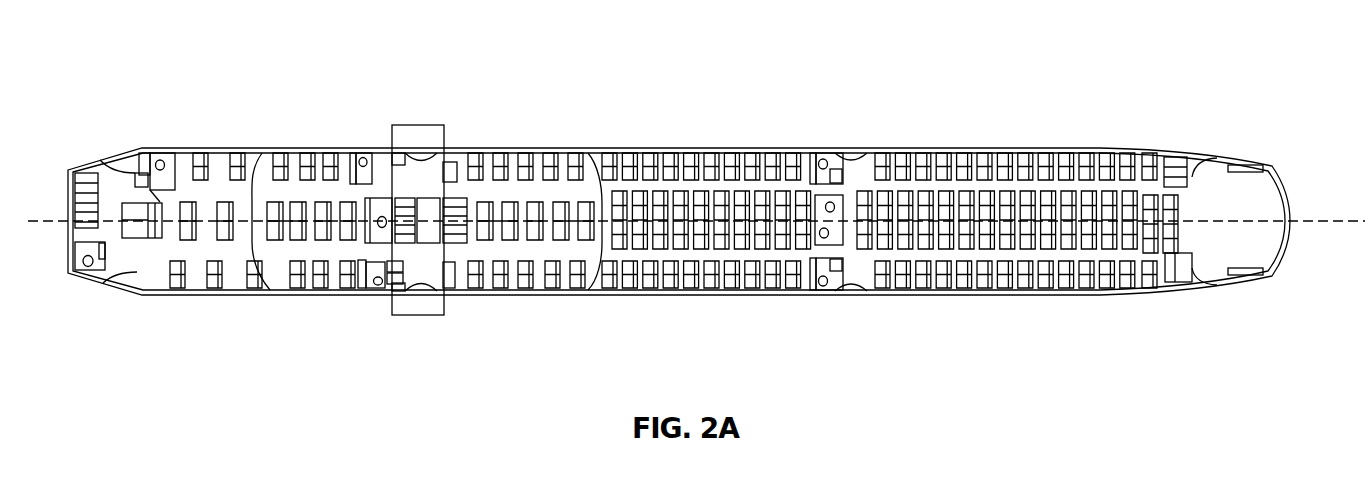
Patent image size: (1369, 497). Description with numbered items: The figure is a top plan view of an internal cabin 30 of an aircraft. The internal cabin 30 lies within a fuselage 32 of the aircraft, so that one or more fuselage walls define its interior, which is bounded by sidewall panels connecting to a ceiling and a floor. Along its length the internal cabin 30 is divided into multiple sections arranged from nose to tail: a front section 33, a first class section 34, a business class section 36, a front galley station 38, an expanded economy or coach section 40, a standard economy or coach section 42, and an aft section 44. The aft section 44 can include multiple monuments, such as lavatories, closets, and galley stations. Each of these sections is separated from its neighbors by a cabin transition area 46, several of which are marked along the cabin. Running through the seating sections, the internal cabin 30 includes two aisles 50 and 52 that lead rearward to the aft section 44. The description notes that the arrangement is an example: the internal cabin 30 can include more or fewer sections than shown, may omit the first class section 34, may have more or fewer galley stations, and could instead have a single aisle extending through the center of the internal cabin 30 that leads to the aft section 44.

The internal cabin 30 is at (206, 50).
The fuselage 32 is at (542, 108).
The front section 33 is at (125, 308).
The first class section 34 is at (223, 295).
The business class section 36 is at (298, 150).
The front galley station 38 is at (417, 309).
The expanded economy or coach section 40 is at (518, 296).
The standard economy or coach section 42 is at (647, 147).
The aft section 44 is at (1214, 177).
The cabin transition area 46 is at (143, 151).
The aisle 50 is at (1008, 187).
The aisle 52 is at (1027, 258).